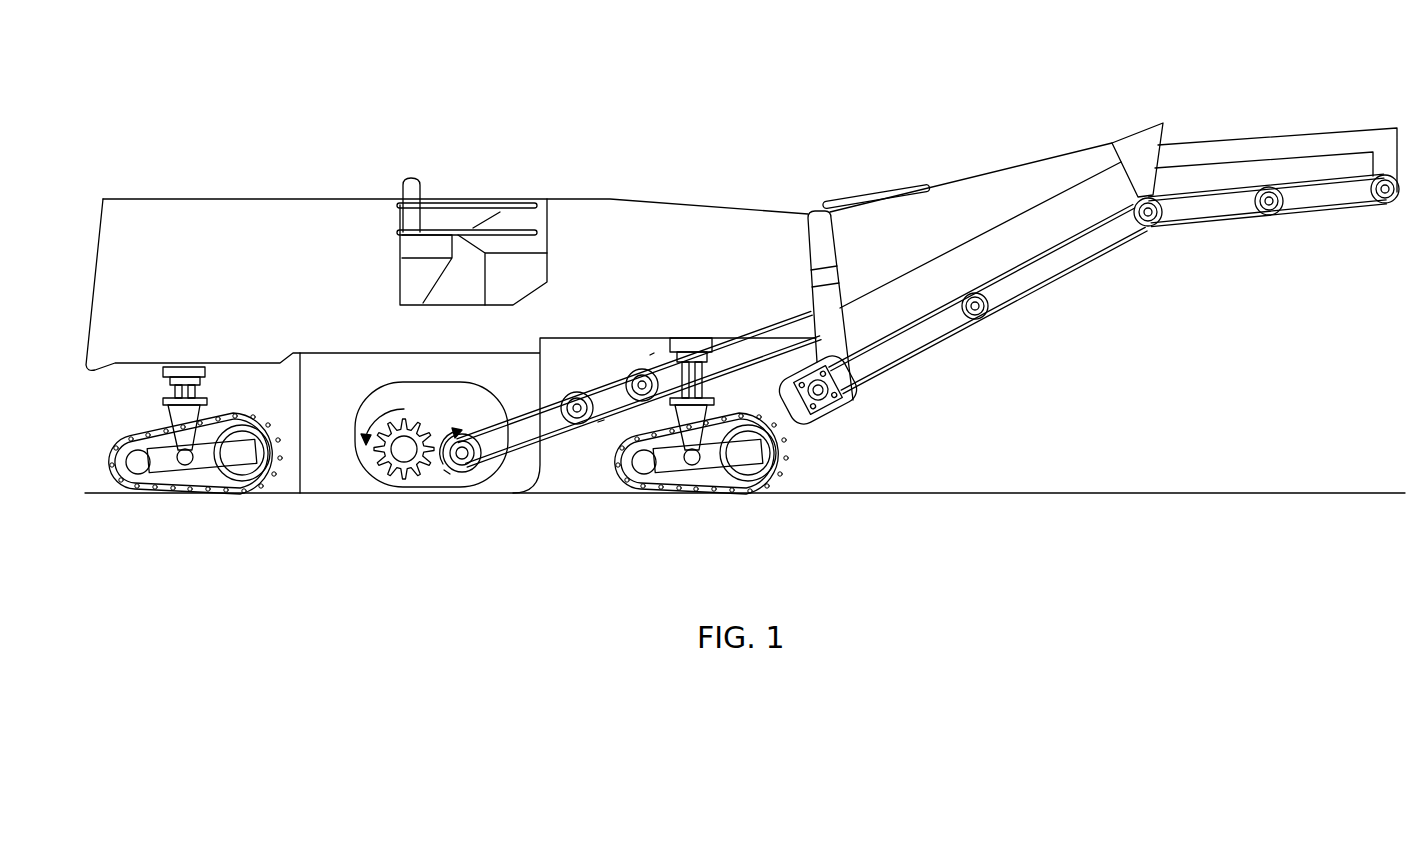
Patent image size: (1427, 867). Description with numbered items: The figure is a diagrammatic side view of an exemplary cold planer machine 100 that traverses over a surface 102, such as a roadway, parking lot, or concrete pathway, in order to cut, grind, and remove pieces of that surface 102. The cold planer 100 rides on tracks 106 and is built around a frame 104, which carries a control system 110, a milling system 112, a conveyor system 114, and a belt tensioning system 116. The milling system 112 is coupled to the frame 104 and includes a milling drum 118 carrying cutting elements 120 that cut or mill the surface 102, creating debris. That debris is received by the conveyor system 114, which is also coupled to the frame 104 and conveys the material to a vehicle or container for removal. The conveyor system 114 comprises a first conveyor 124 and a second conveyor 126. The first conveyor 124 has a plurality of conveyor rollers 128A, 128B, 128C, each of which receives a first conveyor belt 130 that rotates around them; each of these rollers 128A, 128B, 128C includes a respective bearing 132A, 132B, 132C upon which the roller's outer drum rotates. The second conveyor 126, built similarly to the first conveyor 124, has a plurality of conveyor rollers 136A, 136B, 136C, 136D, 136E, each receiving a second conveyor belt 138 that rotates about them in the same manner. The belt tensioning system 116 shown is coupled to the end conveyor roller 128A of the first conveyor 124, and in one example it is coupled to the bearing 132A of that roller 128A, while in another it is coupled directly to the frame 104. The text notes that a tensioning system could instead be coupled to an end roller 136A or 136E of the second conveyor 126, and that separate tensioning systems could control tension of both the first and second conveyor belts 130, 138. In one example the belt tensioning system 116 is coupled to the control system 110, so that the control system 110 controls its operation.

The cold planer machine 100 is at (207, 126).
The surface 102 is at (1140, 492).
The frame 104 is at (1012, 230).
The tracks 106 is at (108, 458).
The control system 110 is at (532, 270).
The milling system 112 is at (405, 370).
The conveyor system 114 is at (858, 250).
The belt tensioning system 116 is at (496, 468).
The milling drum 118 is at (398, 409).
The cutting elements 120 is at (382, 467).
The first conveyor 124 is at (614, 380).
The second conveyor 126 is at (1102, 242).
The conveyor roller 128A is at (460, 437).
The conveyor roller 128B is at (578, 393).
The conveyor roller 128C is at (647, 372).
The first conveyor belt 130 is at (617, 378).
The bearing 132A is at (444, 470).
The bearing 132B is at (598, 422).
The bearing 132C is at (650, 355).
The conveyor roller 136A is at (826, 392).
The conveyor roller 136B is at (979, 320).
The conveyor roller 136C is at (1155, 227).
The conveyor roller 136D is at (1273, 216).
The conveyor roller 136E is at (1390, 204).
The second conveyor belt 138 is at (1023, 299).